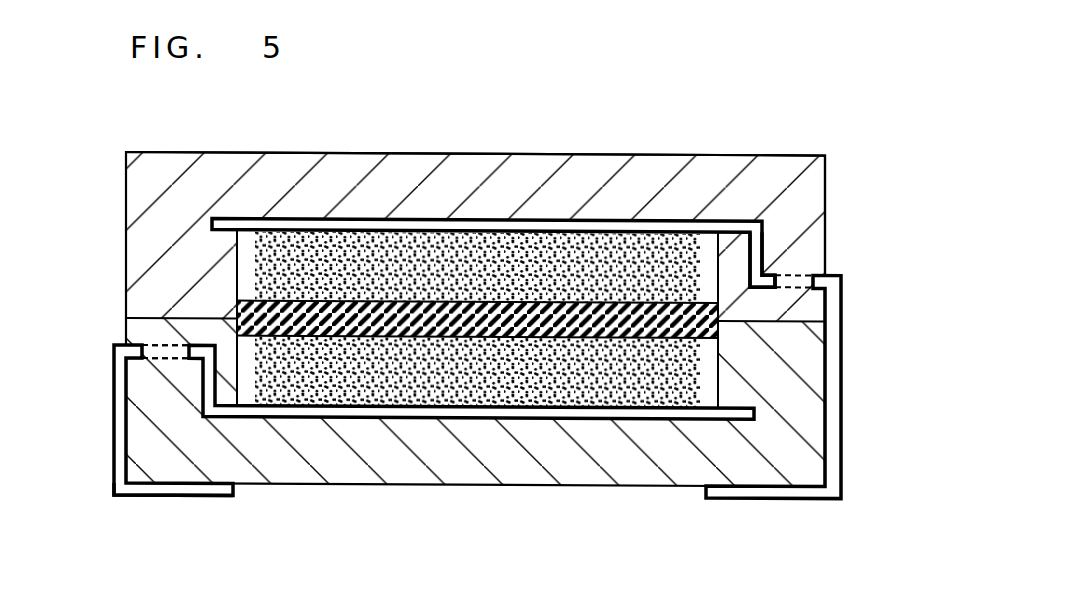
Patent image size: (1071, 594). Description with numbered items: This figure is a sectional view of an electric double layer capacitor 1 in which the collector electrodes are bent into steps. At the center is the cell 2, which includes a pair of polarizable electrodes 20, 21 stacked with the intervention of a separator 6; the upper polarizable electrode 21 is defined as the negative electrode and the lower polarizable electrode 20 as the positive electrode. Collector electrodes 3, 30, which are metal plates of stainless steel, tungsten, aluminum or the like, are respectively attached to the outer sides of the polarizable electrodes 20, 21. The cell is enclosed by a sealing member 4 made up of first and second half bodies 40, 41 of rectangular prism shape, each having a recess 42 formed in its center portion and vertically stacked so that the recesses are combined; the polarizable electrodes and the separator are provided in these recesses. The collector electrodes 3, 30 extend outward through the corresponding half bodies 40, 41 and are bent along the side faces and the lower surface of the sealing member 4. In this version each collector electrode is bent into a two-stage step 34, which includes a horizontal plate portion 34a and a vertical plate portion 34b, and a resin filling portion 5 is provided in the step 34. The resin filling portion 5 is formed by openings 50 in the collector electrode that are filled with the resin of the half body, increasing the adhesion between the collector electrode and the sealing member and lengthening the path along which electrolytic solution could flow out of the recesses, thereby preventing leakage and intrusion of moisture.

The electric double layer capacitor 1 is at (670, 517).
The cell 2 is at (899, 278).
The collector electrode 3 is at (835, 449).
The sealing member 4 is at (73, 192).
The resin filling portion 5 is at (125, 403).
The separator 6 is at (718, 330).
The polarizable electrode 20 is at (700, 372).
The polarizable electrode 21 is at (700, 282).
The collector electrode 30 is at (115, 485).
The two-stage step 34 is at (238, 538).
The horizontal plate portion 34a is at (110, 335).
The vertical plate portion 34b is at (203, 405).
The first half body 40 is at (125, 242).
The second half body 41 is at (123, 323).
The recess 42 is at (712, 237).
The opening 50 is at (150, 358).